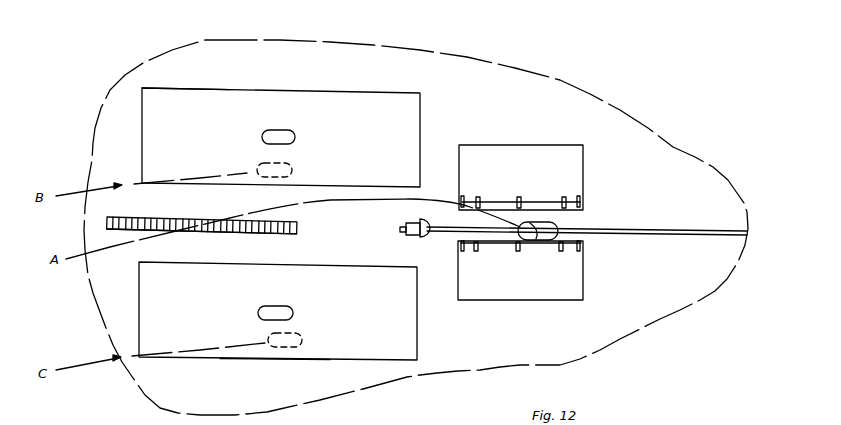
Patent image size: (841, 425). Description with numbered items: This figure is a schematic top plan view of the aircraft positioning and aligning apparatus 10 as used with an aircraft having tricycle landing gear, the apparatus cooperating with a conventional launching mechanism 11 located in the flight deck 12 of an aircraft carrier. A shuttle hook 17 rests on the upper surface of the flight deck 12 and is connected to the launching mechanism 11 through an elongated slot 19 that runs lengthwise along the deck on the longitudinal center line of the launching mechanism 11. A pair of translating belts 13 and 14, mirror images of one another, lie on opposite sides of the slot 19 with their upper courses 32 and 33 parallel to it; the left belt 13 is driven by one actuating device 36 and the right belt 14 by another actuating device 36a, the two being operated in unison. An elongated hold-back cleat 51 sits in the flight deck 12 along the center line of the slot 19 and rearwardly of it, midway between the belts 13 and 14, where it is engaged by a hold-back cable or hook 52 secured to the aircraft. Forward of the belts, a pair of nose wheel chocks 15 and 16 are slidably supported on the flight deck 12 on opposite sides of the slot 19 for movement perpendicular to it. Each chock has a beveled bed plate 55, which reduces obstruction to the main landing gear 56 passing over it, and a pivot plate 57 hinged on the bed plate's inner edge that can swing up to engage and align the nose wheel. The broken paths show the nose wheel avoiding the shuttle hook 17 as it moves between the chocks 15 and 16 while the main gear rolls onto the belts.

The aircraft positioning and aligning apparatus 10 is at (595, 86).
The launching mechanism 11 is at (399, 231).
The flight deck 12 is at (530, 335).
The left translating belt 13 is at (320, 86).
The right translating belt 14 is at (250, 363).
The left nose wheel chock 15 is at (505, 145).
The right nose wheel chock 16 is at (585, 287).
The shuttle hook 17 is at (425, 238).
The elongated slot 19 is at (668, 229).
The upper course of left belt 32 is at (365, 121).
The upper course of right belt 33 is at (386, 330).
The actuating device 36 is at (228, 85).
The actuating device 36a is at (306, 365).
The hold-back cleat 51 is at (137, 218).
The hold-back cable and/or hook 52 is at (150, 226).
The bed plate 55 is at (529, 283).
The main landing gear 56 is at (296, 139).
The pivot plate 57 is at (560, 235).